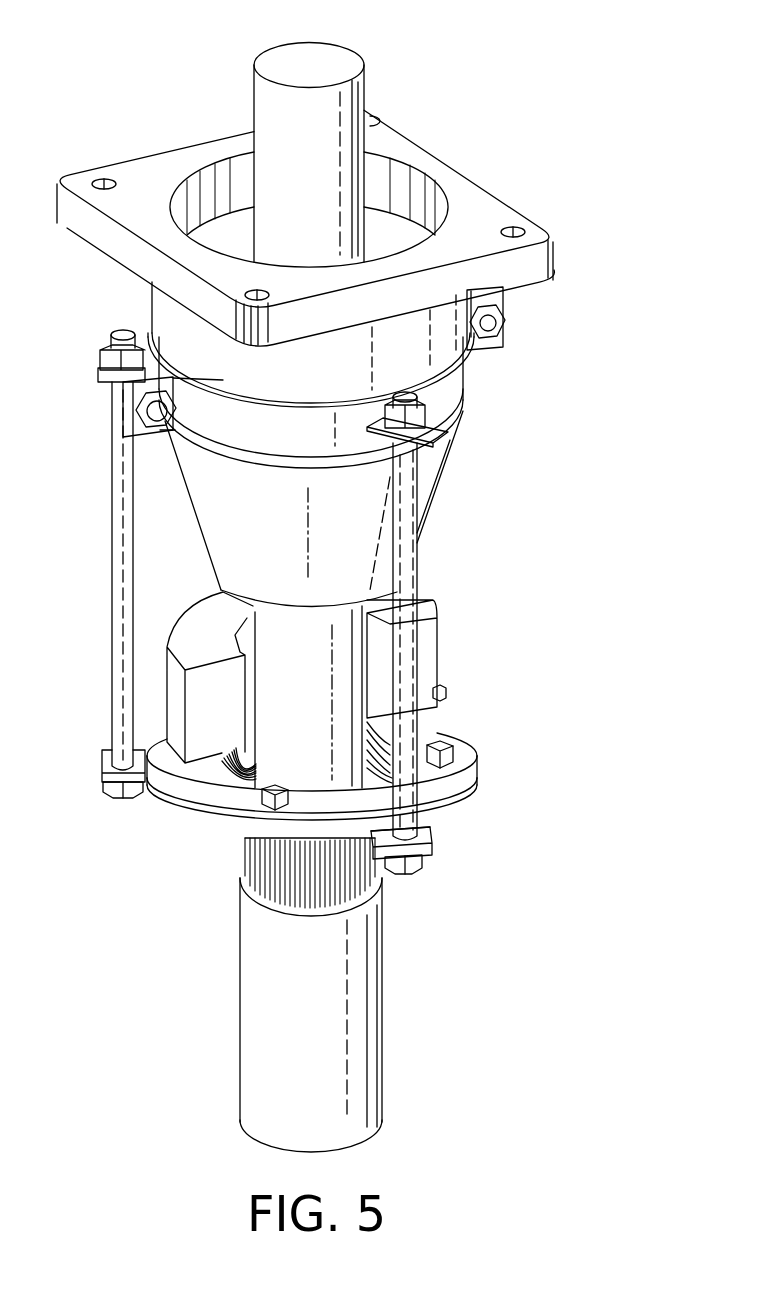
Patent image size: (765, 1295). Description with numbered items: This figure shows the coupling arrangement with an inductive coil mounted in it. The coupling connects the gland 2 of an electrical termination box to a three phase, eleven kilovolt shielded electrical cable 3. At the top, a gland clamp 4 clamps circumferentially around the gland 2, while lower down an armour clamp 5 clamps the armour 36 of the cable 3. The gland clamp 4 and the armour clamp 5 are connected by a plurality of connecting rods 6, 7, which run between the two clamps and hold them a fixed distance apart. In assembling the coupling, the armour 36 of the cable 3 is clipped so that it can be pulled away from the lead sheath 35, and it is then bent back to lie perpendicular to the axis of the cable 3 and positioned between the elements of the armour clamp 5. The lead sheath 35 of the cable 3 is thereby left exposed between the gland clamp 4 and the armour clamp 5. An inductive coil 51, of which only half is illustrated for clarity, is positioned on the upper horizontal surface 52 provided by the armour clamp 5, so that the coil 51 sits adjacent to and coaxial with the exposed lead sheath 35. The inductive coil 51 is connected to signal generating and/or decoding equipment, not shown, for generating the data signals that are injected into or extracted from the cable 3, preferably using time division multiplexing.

The gland 2 is at (558, 248).
The shielded electrical cable 3 is at (383, 1068).
The gland clamp 4 is at (478, 372).
The armour clamp 5 is at (178, 818).
The connecting rod 6 is at (110, 590).
The connecting rod 7 is at (418, 818).
The lead sheath 35 is at (366, 88).
The armour 36 is at (378, 880).
The inductive coil 51 is at (438, 628).
The upper horizontal surface 52 is at (460, 745).